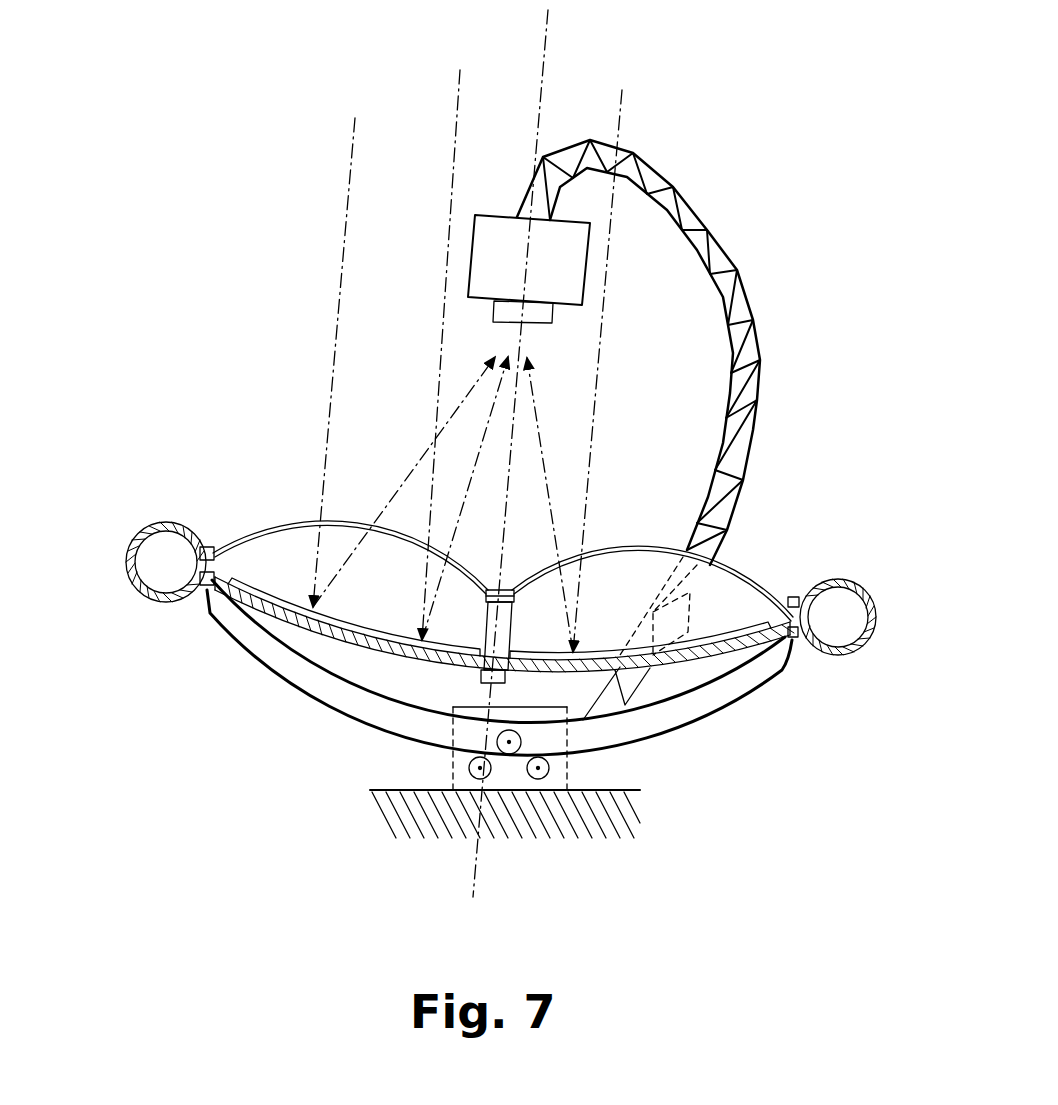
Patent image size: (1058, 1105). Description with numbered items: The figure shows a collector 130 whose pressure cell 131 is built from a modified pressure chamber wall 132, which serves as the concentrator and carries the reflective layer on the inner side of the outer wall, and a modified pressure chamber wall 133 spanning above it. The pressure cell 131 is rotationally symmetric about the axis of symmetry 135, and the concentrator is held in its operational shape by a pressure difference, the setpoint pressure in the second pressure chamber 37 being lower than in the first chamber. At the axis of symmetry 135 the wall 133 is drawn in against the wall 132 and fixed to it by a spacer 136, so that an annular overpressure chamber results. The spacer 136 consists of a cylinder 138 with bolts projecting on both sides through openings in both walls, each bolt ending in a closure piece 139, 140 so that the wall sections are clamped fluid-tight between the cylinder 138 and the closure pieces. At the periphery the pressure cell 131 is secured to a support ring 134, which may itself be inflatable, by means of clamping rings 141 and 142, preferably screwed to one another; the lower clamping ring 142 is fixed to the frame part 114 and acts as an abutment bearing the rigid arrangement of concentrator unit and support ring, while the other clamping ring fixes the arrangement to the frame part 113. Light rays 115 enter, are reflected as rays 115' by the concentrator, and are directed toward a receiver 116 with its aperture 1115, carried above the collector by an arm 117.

The collector 130 is at (260, 124).
The pressure cell 131 is at (258, 493).
The pressure chamber wall 133 is at (343, 517).
The pressure chamber wall 132 is at (322, 625).
The spacer 136 is at (470, 641).
The closure piece 140 is at (492, 588).
The cylinder 138 is at (483, 681).
The support ring 134 is at (127, 570).
The frame part 113 is at (748, 620).
The clamping ring 141 is at (205, 548).
The clamping ring 142 is at (207, 578).
The frame part 114 is at (740, 680).
The closure piece 139 is at (453, 710).
The truss arm 117 is at (723, 227).
The receiver 116 is at (710, 660).
The receiver aperture 1115 is at (553, 315).
The axis of symmetry 135 is at (547, 48).
The incident light rays 115 is at (595, 361).
The reflected light rays 115' is at (601, 504).
The second pressure chamber 37 is at (501, 580).